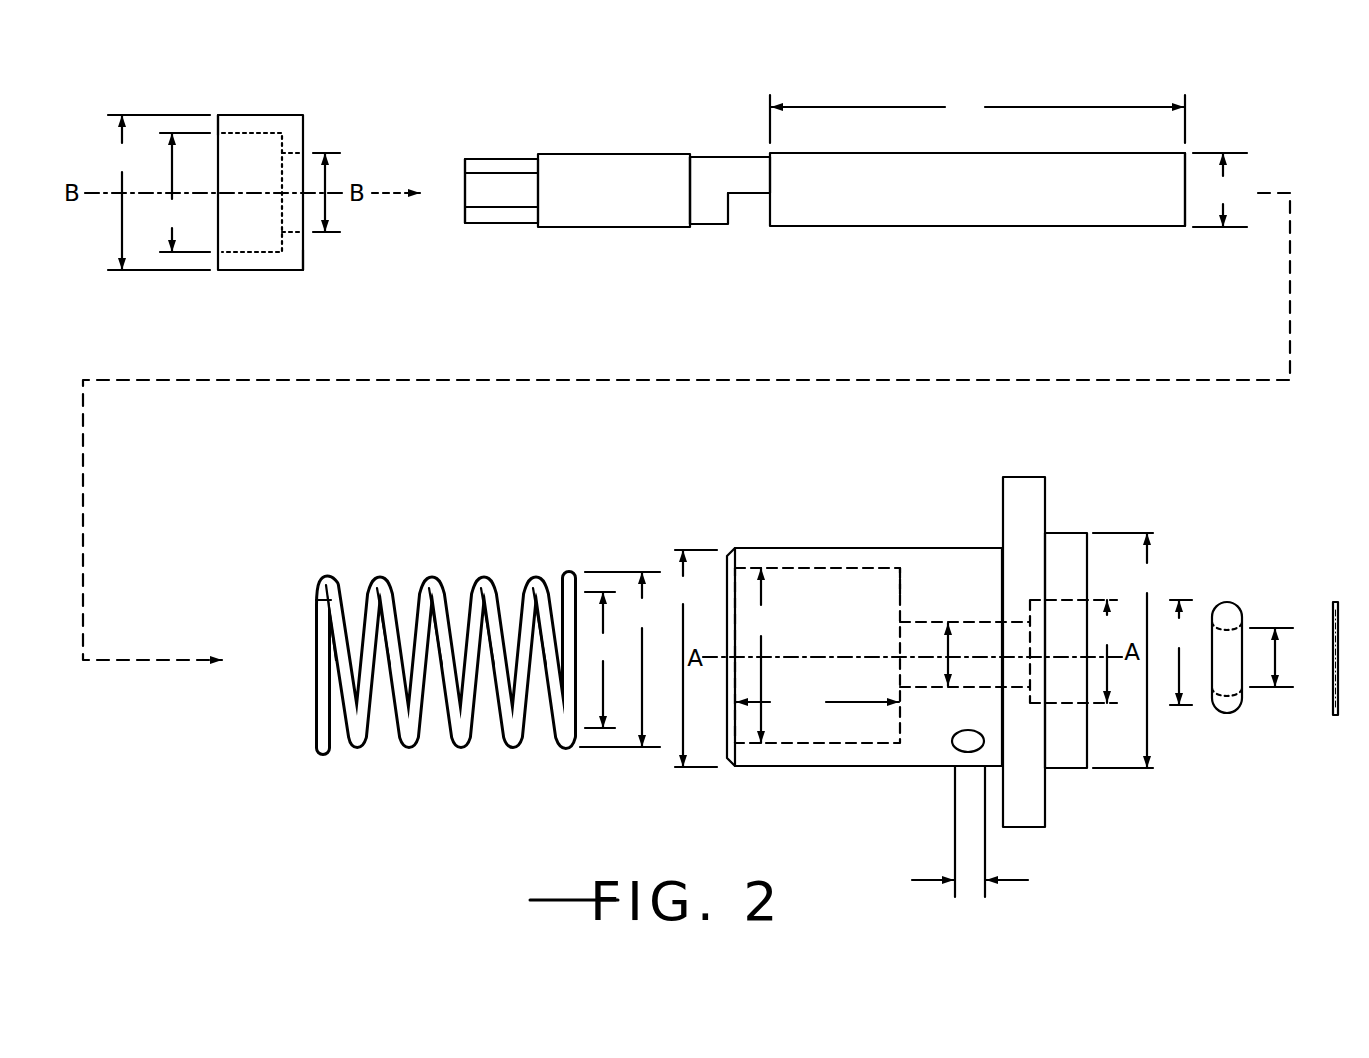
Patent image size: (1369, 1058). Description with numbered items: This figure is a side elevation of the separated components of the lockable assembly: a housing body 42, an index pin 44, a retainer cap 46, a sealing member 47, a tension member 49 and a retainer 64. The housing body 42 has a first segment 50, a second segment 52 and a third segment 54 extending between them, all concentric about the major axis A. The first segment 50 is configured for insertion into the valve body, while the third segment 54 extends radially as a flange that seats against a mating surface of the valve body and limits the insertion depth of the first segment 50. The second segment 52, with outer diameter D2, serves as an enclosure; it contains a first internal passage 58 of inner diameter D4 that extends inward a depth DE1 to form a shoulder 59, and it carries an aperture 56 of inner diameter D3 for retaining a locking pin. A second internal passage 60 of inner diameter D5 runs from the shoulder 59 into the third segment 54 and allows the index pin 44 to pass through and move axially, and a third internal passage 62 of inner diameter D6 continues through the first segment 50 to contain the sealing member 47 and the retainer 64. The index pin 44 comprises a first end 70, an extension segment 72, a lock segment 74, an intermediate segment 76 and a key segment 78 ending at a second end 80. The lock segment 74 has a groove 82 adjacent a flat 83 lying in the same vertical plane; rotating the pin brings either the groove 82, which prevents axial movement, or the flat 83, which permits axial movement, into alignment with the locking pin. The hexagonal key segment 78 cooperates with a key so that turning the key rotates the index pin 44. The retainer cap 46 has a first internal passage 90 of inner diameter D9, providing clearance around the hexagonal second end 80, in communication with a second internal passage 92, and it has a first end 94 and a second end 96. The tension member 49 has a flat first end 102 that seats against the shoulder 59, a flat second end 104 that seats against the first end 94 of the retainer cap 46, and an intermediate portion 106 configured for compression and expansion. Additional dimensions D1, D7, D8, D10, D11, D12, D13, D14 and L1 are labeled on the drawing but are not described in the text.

The housing body 42 is at (878, 657).
The index pin 44 is at (816, 200).
The retainer cap 46 is at (253, 276).
The sealing member 47 is at (1227, 714).
The tension member 49 is at (426, 647).
The first segment 50 is at (1073, 532).
The second segment 52 is at (845, 546).
The third segment 54 is at (1028, 477).
The aperture 56 is at (968, 730).
The first internal passage 58 is at (798, 572).
The shoulder 59 is at (898, 585).
The second internal passage 60 is at (980, 620).
The third internal passage 62 is at (1062, 705).
The retainer 64 is at (1336, 716).
The first end 70 is at (1165, 152).
The extension segment 72 is at (1185, 267).
The lock segment 74 is at (770, 267).
The intermediate segment 76 is at (690, 267).
The key segment 78 is at (538, 267).
The second end 80 is at (502, 158).
The groove 82 is at (745, 192).
The flat 83 is at (705, 165).
The first internal passage 90 is at (243, 133).
The second internal passage 92 is at (293, 153).
The first end 94 is at (305, 255).
The second end 96 is at (217, 122).
The first end 102 is at (578, 712).
The second end 104 is at (314, 718).
The intermediate portion 106 is at (570, 537).
The boss diameter D1 is at (1127, 650).
The outer diameter D2 is at (692, 658).
The inner diameter D3 is at (970, 883).
The inner diameter D4 is at (760, 655).
The inner diameter D5 is at (945, 640).
The inner diameter D6 is at (1108, 651).
The shaft diameter D7 is at (1220, 190).
The sleeve outer diameter D8 is at (158, 192).
The inner diameter D9 is at (183, 192).
The sleeve step diameter D10 is at (326, 208).
The pin diameter D11 is at (1273, 658).
The pin length D12 is at (1177, 652).
The spring inner diameter D13 is at (603, 660).
The spring outer diameter D14 is at (621, 659).
The depth DE1 is at (817, 702).
The shaft main portion length L1 is at (977, 118).